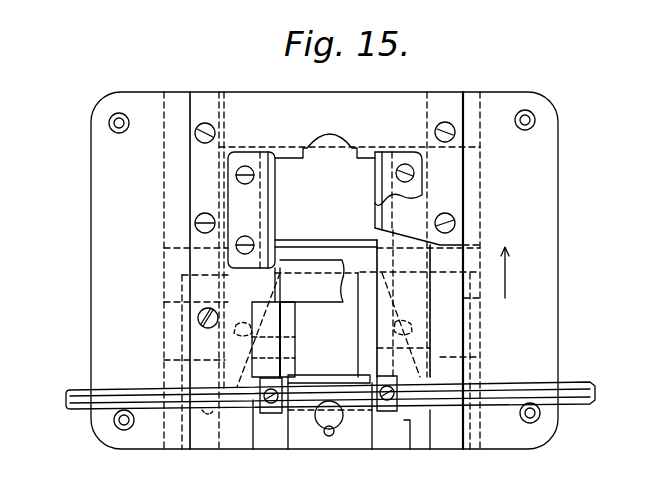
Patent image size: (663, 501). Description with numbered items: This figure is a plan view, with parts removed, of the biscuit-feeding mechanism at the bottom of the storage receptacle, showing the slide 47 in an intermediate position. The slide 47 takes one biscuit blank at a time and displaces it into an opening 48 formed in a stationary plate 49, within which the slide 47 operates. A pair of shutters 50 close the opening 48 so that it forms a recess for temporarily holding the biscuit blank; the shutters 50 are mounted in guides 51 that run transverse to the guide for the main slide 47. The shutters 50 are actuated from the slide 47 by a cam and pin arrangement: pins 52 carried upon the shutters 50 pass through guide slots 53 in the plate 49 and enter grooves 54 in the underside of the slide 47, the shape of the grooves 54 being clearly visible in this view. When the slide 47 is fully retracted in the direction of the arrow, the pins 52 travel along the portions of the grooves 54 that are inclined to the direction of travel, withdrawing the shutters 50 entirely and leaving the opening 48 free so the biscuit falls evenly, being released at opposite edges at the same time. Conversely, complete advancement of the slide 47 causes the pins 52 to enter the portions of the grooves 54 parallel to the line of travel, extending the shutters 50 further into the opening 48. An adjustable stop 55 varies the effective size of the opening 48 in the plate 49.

The slide 47 is at (322, 147).
The opening 48 is at (329, 328).
The stationary plate 49 is at (97, 181).
The shutters 50 is at (358, 320).
The guides 51 is at (437, 298).
The pins 52 is at (387, 332).
The guide slots 53 is at (241, 320).
The grooves 54 is at (240, 355).
The adjustable stop 55 is at (358, 436).